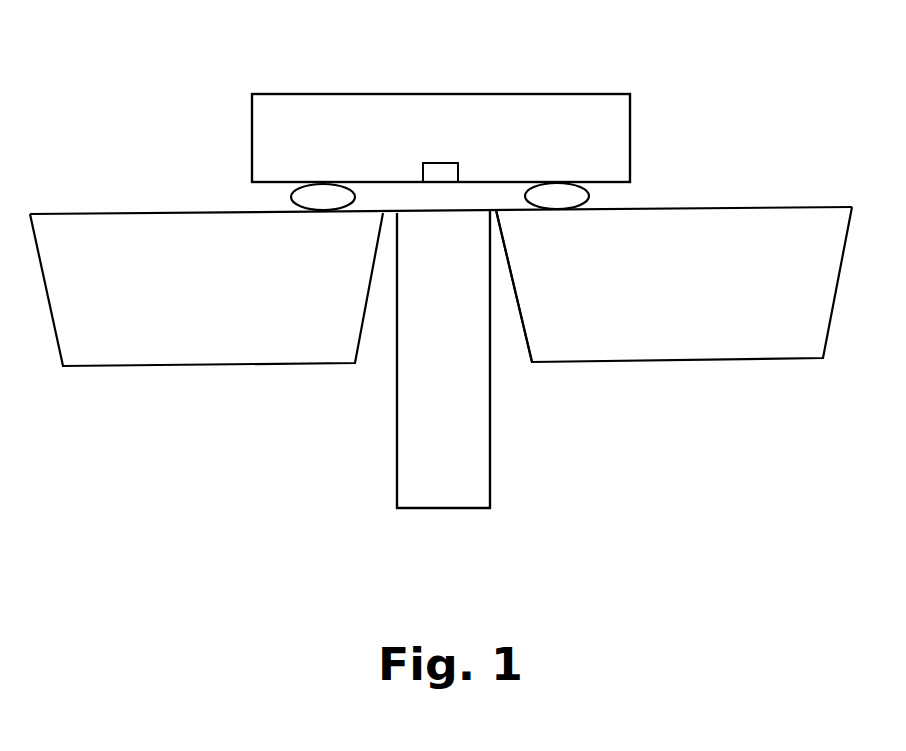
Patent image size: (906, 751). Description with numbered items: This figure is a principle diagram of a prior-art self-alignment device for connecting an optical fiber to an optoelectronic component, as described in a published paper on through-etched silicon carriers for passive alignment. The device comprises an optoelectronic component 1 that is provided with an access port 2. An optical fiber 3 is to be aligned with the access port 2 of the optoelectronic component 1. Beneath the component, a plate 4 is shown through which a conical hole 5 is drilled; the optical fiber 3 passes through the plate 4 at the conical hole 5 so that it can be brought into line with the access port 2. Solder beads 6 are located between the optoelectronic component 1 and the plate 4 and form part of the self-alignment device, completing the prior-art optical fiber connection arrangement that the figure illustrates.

The optoelectronic component 1 is at (305, 118).
The access port 2 is at (444, 168).
The optical fiber 3 is at (417, 428).
The plate 4 is at (745, 313).
The conical hole 5 is at (507, 333).
The solder beads 6 is at (578, 196).